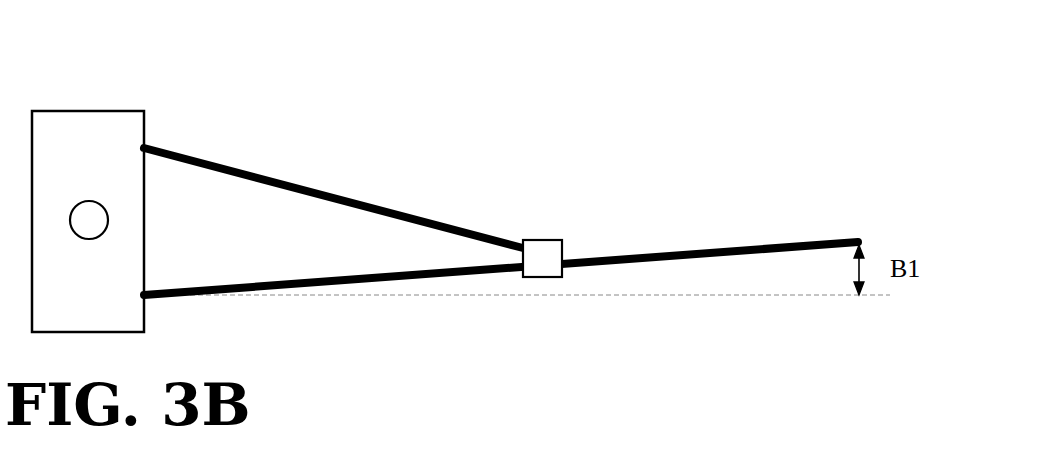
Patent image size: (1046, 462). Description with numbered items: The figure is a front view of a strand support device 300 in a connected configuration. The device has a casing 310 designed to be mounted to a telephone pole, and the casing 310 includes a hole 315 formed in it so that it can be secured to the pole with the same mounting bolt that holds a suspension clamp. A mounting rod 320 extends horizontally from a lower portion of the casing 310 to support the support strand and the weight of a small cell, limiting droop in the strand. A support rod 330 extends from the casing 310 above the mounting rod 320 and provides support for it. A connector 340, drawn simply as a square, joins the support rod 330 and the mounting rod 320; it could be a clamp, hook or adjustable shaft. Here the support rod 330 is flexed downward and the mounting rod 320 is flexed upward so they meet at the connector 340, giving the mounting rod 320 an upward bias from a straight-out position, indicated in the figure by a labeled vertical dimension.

The strand support device 300 is at (790, 90).
The casing 310 is at (82, 111).
The hole 315 is at (89, 201).
The mounting rod 320 is at (285, 285).
The support rod 330 is at (291, 189).
The connector 340 is at (539, 240).